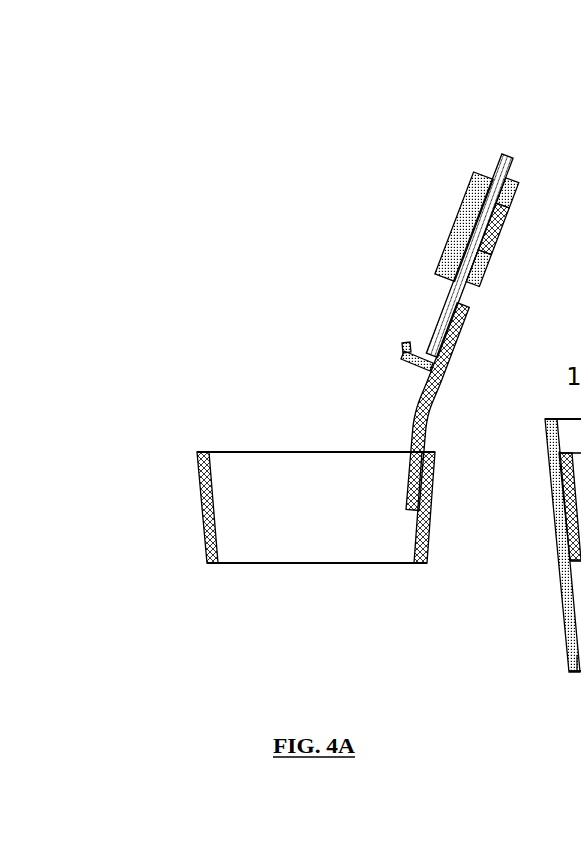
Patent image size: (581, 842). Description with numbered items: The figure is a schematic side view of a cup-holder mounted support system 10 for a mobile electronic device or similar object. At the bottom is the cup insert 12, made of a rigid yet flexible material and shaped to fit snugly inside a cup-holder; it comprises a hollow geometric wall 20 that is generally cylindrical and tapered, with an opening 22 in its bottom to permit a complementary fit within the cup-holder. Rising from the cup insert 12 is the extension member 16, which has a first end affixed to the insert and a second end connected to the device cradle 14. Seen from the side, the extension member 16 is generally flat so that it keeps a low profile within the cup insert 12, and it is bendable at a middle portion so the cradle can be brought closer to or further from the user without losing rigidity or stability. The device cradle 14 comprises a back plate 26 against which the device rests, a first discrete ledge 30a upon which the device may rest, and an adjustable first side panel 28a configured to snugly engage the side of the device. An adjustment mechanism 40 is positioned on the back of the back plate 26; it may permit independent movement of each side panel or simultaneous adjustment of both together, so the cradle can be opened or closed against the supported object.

The container apparatus 10 is at (274, 202).
The cup insert 12 is at (232, 442).
The device cradle 14 is at (428, 292).
The extension member 16 is at (429, 417).
The hollow geometric wall 20 is at (204, 494).
The opening 22 is at (278, 560).
The back plate 26 is at (502, 155).
The first side panel 28a is at (461, 205).
The first ledge 30a is at (400, 347).
The adjustment mechanism 40 is at (498, 237).